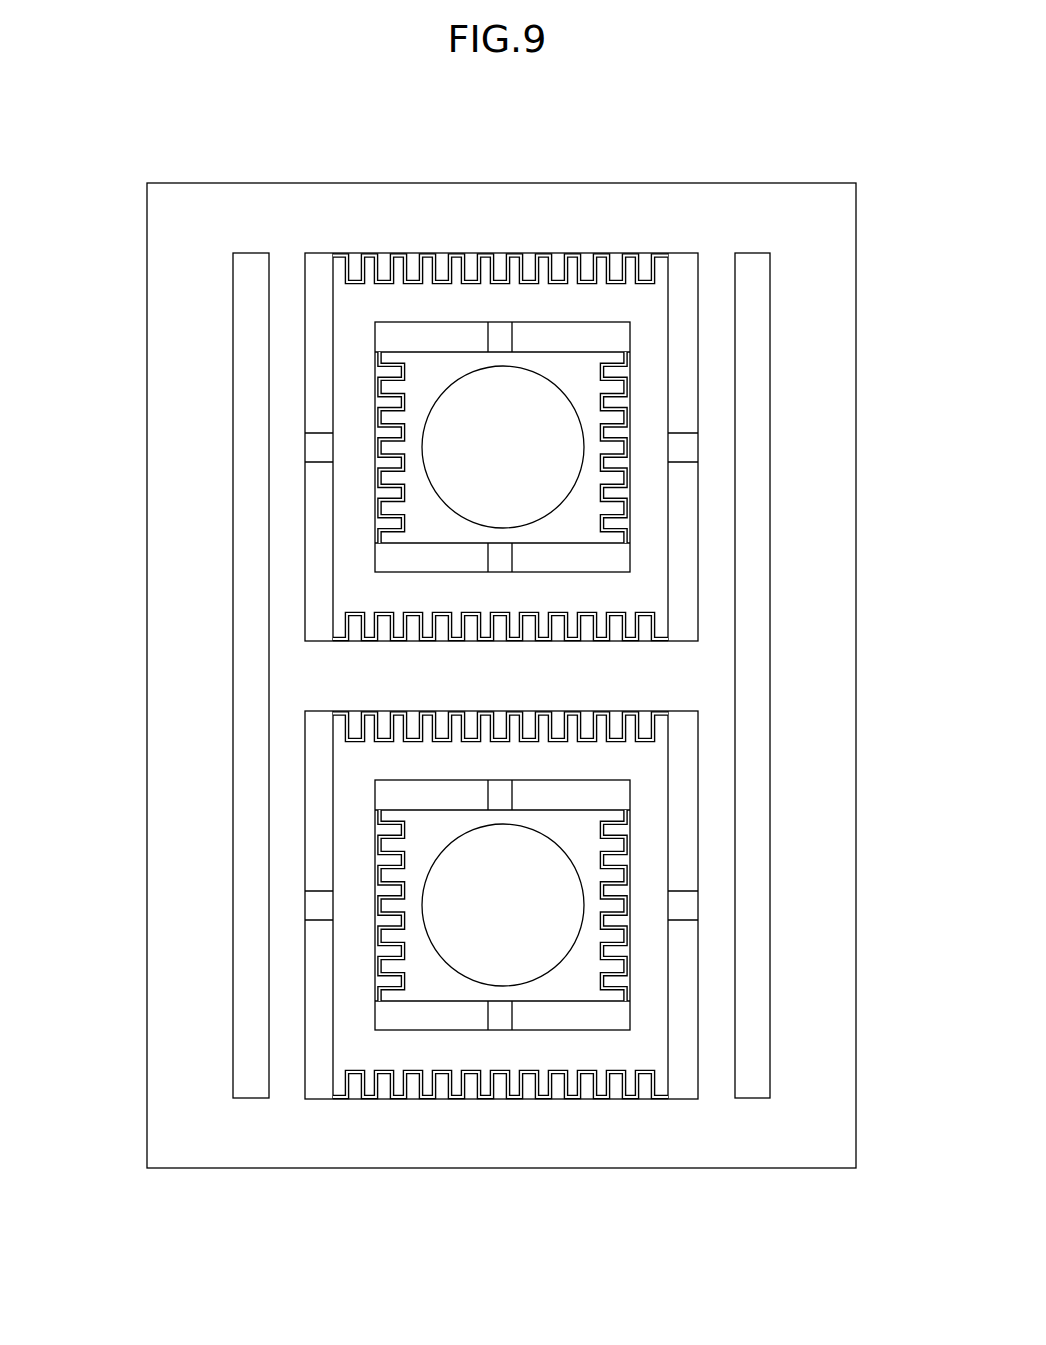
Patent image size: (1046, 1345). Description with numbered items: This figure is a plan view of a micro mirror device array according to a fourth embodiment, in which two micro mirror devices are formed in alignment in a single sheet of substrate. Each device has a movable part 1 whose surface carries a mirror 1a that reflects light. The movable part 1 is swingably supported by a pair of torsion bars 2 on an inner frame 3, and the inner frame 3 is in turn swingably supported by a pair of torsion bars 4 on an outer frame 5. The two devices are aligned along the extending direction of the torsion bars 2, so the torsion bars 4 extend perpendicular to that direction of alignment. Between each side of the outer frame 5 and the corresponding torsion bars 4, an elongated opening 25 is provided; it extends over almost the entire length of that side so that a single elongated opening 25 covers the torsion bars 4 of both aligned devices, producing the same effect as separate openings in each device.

The movable part 1 is at (433, 373).
The mirror 1a is at (455, 410).
The torsion bars 2 is at (513, 338).
The inner frame 3 is at (633, 580).
The torsion bars 4 is at (680, 463).
The outer frame 5 is at (800, 410).
The elongated opening 25 is at (250, 312).